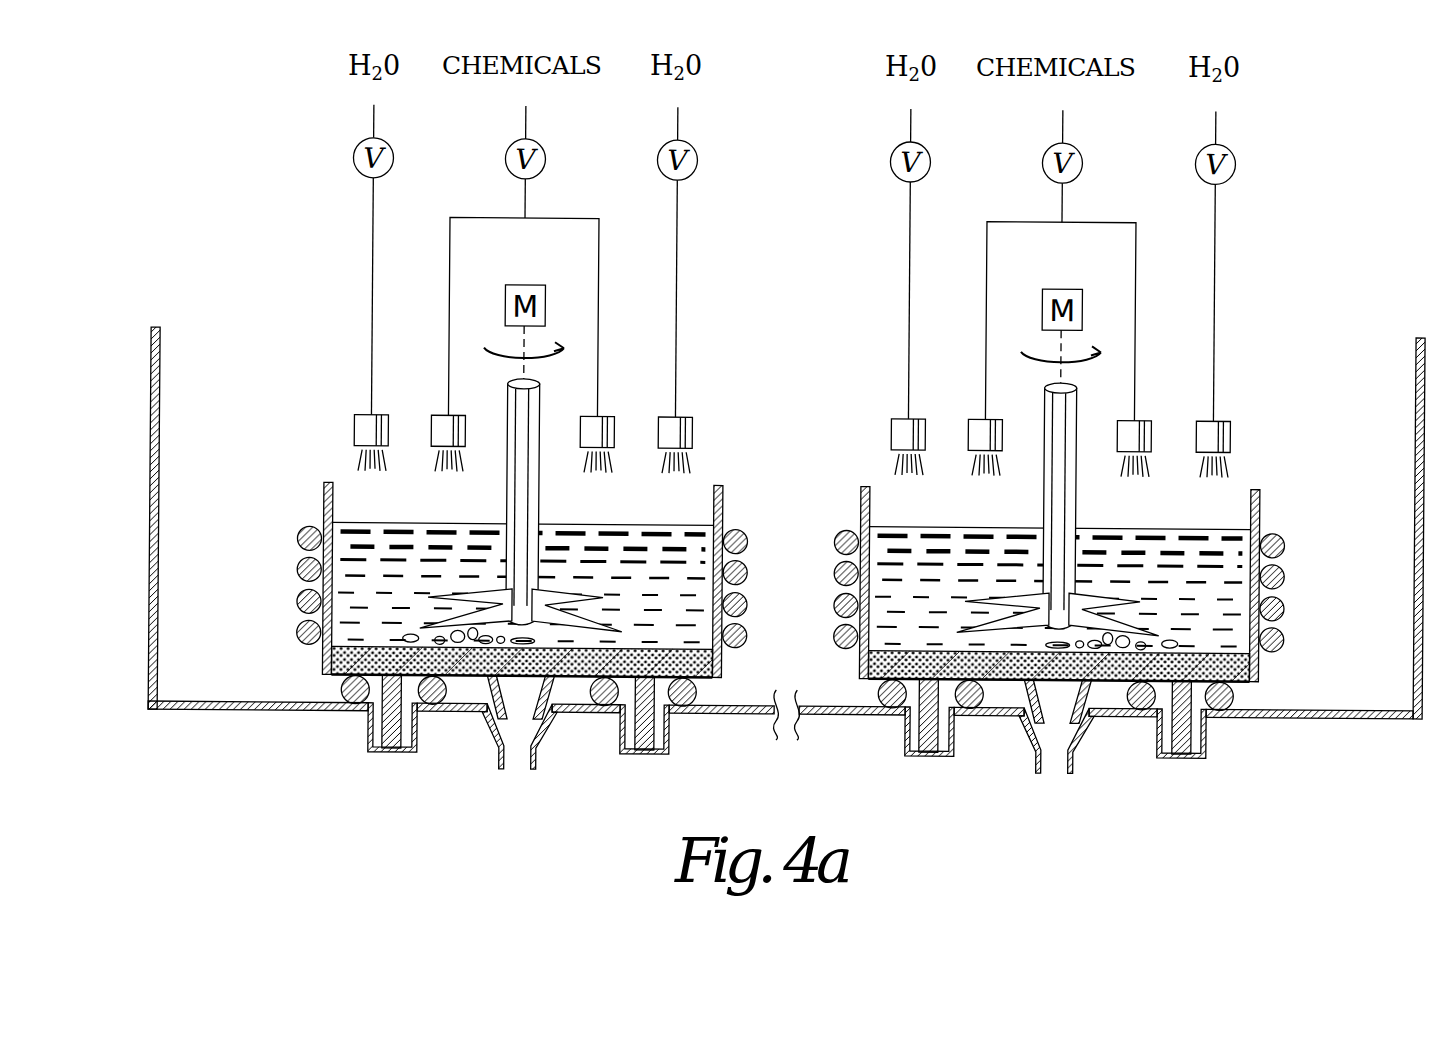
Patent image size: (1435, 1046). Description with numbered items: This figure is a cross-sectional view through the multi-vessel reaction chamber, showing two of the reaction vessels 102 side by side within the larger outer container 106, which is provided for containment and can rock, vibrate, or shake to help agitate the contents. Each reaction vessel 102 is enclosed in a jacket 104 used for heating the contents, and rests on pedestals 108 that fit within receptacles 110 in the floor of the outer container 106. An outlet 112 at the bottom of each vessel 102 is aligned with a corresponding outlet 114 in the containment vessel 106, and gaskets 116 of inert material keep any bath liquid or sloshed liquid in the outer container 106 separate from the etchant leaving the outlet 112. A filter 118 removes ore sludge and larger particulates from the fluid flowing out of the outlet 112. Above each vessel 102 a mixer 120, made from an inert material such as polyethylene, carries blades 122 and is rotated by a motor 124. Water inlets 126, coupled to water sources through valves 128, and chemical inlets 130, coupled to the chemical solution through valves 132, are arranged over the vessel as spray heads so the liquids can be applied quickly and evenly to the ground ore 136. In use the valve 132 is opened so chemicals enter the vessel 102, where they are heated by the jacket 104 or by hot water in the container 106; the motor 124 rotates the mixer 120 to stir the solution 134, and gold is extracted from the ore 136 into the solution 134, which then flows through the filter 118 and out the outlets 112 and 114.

The reaction vessel 102 is at (860, 505).
The jacket 104 is at (297, 570).
The outer container 106 is at (158, 660).
The pedestal 108 is at (384, 724).
The receptacle 110 is at (396, 750).
The outlet of reaction vessel 112 is at (522, 692).
The outlet of containment vessel 114 is at (545, 745).
The gasket 116 is at (342, 690).
The filter 118 is at (496, 712).
The mixer 120 is at (524, 497).
The blades 122 is at (478, 604).
The motor 124 is at (522, 284).
The water inlet 126 is at (360, 432).
The valve 128 is at (350, 158).
The chemical inlet 130 is at (440, 432).
The valve 132 is at (502, 158).
The solution 134 is at (672, 604).
The ore 136 is at (412, 632).